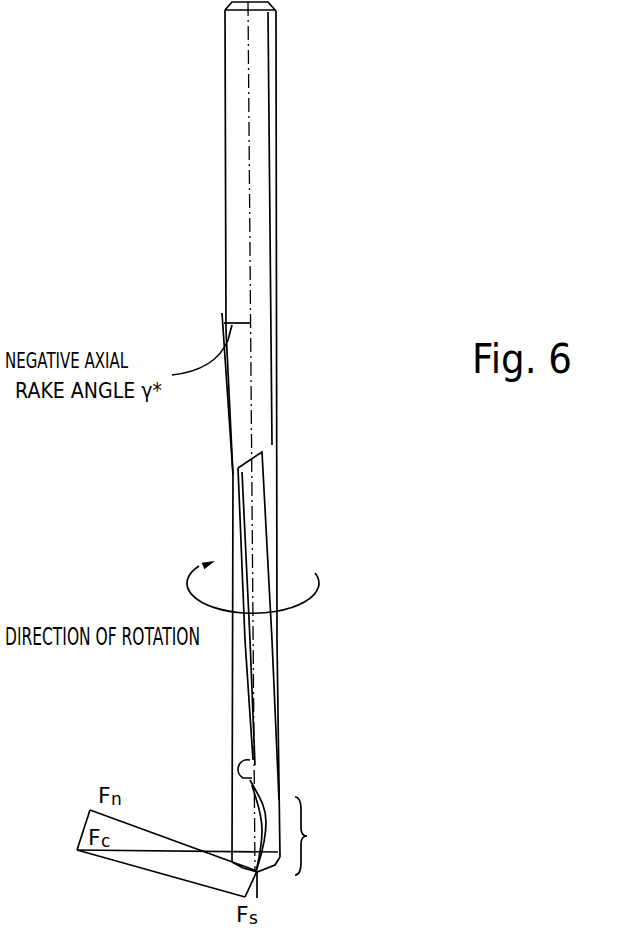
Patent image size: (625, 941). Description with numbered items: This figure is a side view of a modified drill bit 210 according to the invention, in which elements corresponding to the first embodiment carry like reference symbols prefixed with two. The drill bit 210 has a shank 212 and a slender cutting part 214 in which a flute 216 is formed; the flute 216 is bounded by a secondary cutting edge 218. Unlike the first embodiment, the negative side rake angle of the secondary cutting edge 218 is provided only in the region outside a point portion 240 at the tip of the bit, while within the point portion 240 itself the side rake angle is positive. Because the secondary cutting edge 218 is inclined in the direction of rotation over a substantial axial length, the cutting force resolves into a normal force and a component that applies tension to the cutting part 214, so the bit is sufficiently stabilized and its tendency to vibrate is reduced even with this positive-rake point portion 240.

The drill bit 210 is at (300, 429).
The shank 212 is at (262, 238).
The cutting part 214 is at (275, 551).
The flute 216 is at (240, 800).
The secondary cutting edge 218 is at (250, 760).
The point portion 240 is at (313, 836).